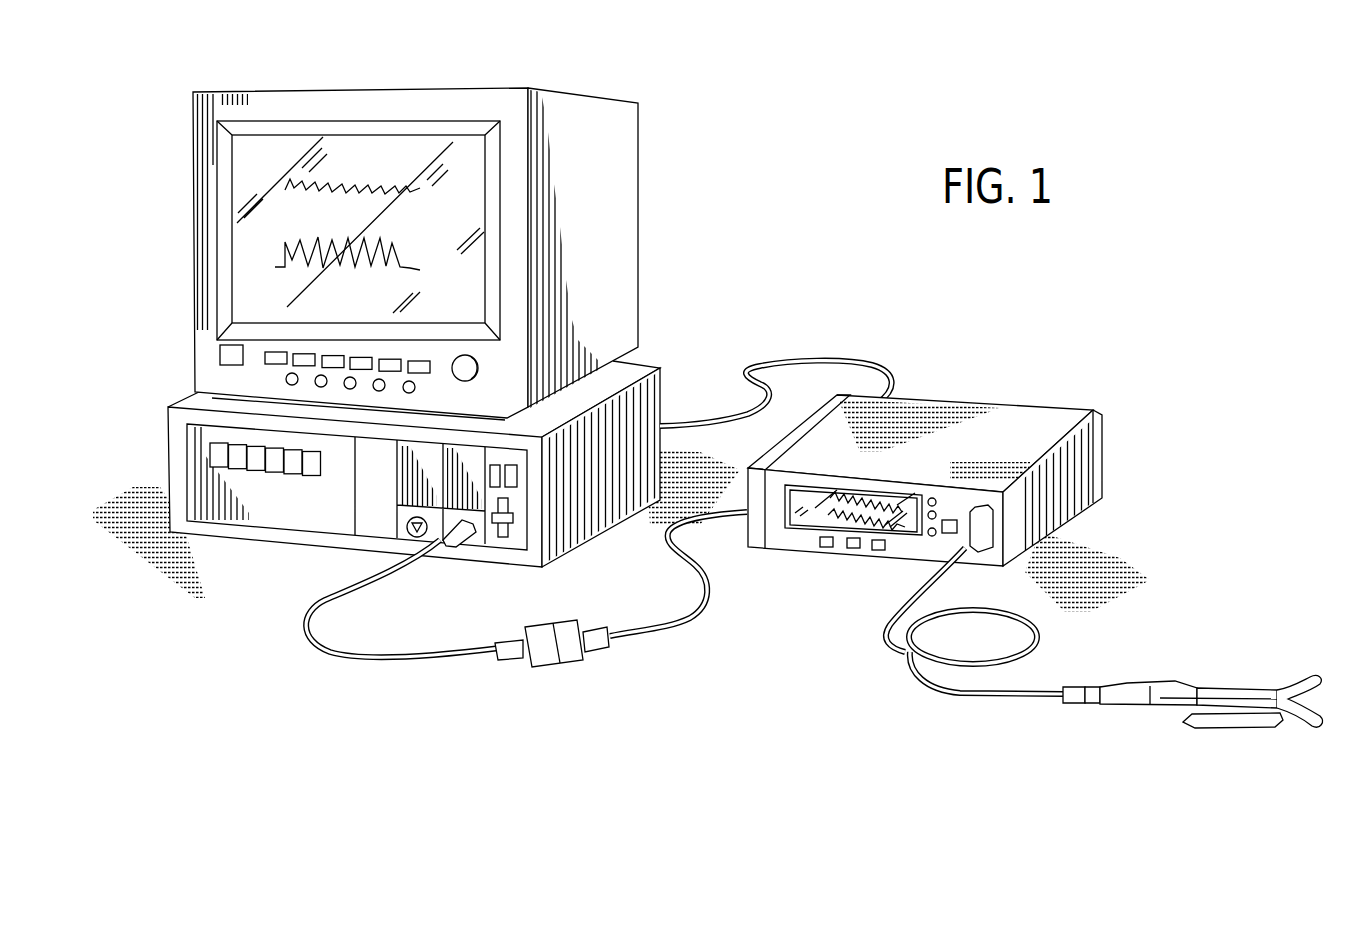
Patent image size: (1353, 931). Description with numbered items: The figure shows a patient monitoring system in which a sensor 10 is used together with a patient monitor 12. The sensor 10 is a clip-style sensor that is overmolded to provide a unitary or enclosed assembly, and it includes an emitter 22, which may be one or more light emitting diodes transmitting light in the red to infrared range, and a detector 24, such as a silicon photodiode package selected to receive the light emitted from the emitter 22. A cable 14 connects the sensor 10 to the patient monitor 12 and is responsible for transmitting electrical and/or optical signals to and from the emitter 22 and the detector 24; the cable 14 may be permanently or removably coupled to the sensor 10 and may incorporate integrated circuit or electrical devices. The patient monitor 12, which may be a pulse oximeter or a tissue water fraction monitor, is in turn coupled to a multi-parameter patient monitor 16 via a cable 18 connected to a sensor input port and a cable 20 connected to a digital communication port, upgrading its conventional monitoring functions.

The sensor 10 is at (1305, 727).
The patient monitor 12 is at (1008, 403).
The cable 14 is at (880, 640).
The multi-parameter patient monitor 16 is at (480, 86).
The cable 18 is at (710, 612).
The cable 20 is at (787, 363).
The emitter 22 is at (1223, 688).
The detector 24 is at (1220, 727).